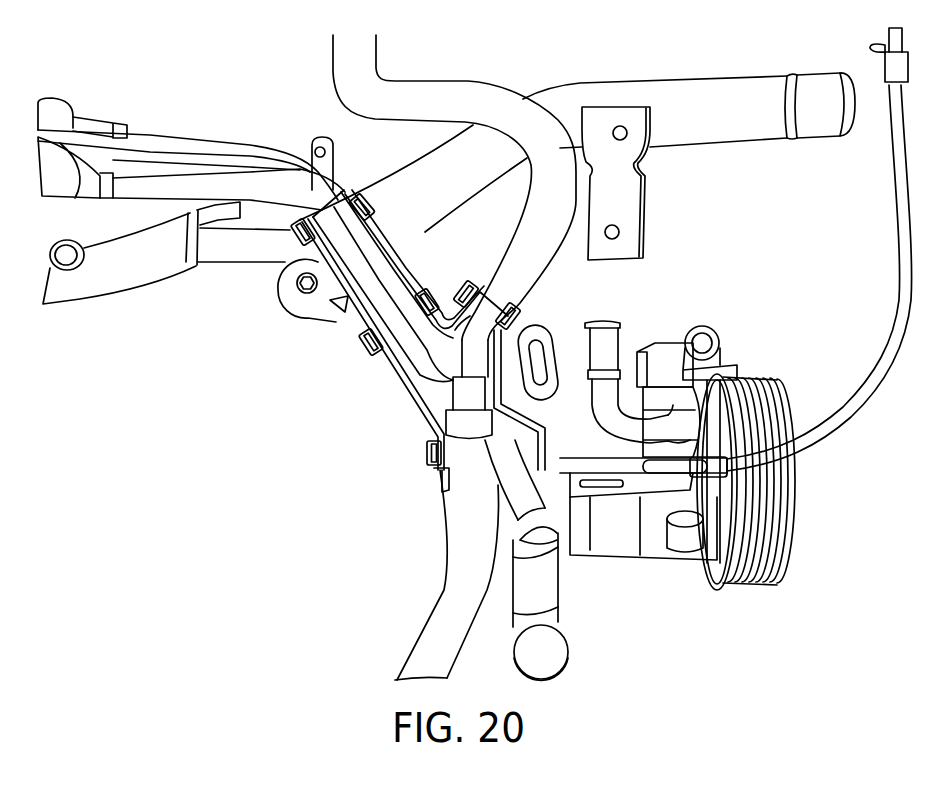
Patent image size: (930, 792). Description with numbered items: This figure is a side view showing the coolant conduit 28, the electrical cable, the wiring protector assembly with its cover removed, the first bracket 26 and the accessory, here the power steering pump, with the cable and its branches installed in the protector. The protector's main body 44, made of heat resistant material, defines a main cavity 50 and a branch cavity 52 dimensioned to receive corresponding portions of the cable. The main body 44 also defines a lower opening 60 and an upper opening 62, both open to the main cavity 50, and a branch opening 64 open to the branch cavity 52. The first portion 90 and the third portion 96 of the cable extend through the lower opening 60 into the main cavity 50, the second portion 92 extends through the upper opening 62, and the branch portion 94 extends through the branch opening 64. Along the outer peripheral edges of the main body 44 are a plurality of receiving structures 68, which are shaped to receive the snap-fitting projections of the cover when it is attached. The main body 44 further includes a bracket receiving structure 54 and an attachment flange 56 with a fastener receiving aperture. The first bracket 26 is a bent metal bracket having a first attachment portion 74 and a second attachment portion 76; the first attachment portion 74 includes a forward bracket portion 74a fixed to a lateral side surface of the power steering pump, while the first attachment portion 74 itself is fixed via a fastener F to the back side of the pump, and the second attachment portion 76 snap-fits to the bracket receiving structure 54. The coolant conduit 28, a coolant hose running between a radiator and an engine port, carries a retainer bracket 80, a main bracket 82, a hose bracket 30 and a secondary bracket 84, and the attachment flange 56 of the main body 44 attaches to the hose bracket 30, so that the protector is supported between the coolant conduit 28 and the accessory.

The branch portion 94 is at (452, 99).
The coolant conduit 28 is at (575, 82).
The upper opening 62 is at (366, 196).
The receiving structures 68 is at (293, 230).
The main bracket 82 is at (347, 168).
The branch cavity 52 is at (405, 263).
The branch opening 64 is at (467, 310).
The secondary bracket 84 is at (290, 234).
The second portion 92 is at (300, 256).
The fastener F is at (297, 285).
The attachment flange 56 is at (303, 300).
The main body 44 is at (393, 366).
The main cavity 50 is at (432, 371).
The bracket receiving structure 54 is at (472, 425).
The lower opening 60 is at (490, 460).
The third portion 96 is at (530, 587).
The first portion 90 is at (447, 613).
The first attachment portion 74 is at (586, 540).
The first bracket 26 is at (610, 504).
The forward bracket portion 74a is at (648, 507).
The second attachment portion 76 is at (550, 343).
The retainer bracket 80 is at (620, 198).
The hose bracket 30 is at (190, 243).